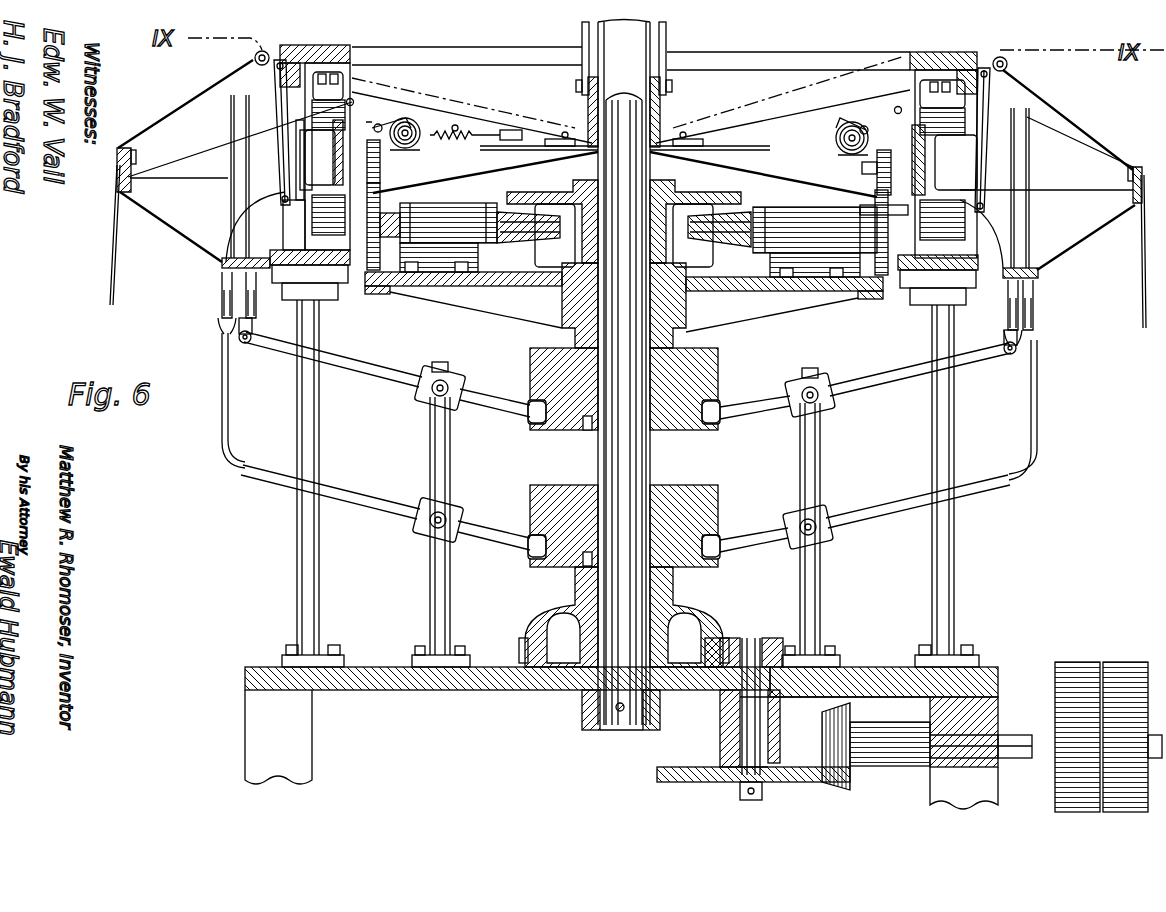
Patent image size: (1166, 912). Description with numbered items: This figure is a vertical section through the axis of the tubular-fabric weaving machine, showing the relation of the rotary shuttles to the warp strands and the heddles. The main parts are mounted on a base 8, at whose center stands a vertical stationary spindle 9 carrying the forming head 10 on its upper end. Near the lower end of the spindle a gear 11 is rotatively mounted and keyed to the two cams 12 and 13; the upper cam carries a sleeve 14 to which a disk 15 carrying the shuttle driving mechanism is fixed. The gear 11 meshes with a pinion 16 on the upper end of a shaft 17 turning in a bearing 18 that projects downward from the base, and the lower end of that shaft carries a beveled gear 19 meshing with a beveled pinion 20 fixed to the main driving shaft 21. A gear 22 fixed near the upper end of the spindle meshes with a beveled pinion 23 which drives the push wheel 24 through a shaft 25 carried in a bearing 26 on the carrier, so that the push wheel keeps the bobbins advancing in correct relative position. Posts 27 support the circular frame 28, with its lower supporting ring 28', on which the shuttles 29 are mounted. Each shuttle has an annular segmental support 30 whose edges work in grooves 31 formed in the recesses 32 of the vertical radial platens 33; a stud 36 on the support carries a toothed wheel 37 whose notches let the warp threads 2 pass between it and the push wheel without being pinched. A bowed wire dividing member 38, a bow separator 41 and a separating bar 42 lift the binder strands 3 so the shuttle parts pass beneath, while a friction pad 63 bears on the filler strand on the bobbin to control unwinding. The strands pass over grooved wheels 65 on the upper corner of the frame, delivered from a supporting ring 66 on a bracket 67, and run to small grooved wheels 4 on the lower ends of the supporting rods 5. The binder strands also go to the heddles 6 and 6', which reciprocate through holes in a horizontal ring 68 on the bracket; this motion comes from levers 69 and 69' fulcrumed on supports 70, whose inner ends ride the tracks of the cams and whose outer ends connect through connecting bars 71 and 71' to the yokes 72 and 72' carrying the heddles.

The warp threads 2 is at (770, 180).
The binder strands 3 is at (114, 240).
The grooved wheels 4 is at (283, 205).
The supporting rods 5 is at (300, 187).
The heddle 6 is at (622, 181).
The heddle 6' is at (628, 181).
The base 8 is at (432, 690).
The vertical stationary spindle 9 is at (612, 732).
The forming head 10 is at (617, 98).
The gear 11 is at (678, 604).
The cam 12 is at (718, 503).
The cam 13 is at (718, 374).
The sleeve 14 is at (690, 335).
The disk 15 is at (440, 290).
The pinion 16 is at (728, 640).
The shaft 17 is at (740, 712).
The bearing 18 is at (722, 742).
The beveled gear 19 is at (660, 777).
The beveled pinion 20 is at (852, 775).
The main driving shaft 21 is at (1008, 733).
The gear 22 is at (566, 192).
The beveled pinion 23 is at (718, 241).
The push wheel 24 is at (878, 280).
The shaft 25 is at (718, 218).
The bearing 26 is at (468, 204).
The posts 27 is at (956, 550).
The circular frame 28 is at (628, 55).
The lower supporting ring 28' is at (623, 288).
The shuttles 29 is at (846, 152).
The annular segmental support 30 is at (334, 166).
The grooves 31 is at (371, 185).
The recesses 32 is at (300, 142).
The vertical radial platens 33 is at (920, 90).
The stud 36 is at (876, 182).
The toothed wheel 37 is at (910, 213).
The bowed wire dividing member 38 is at (356, 101).
The bow separator 41 is at (565, 132).
The separating bar 42 is at (457, 124).
The friction pad 63 is at (400, 118).
The grooved wheels 65 is at (255, 57).
The supporting ring 66 is at (1136, 207).
The bracket 67 is at (1076, 250).
The horizontal ring 68 is at (1040, 277).
The lever 69 is at (627, 375).
The lever 69' is at (625, 504).
The supports 70 is at (798, 448).
The connecting bar 71 is at (628, 332).
The connecting bar 71' is at (651, 406).
The yoke 72 is at (604, 301).
The yoke 72' is at (600, 326).